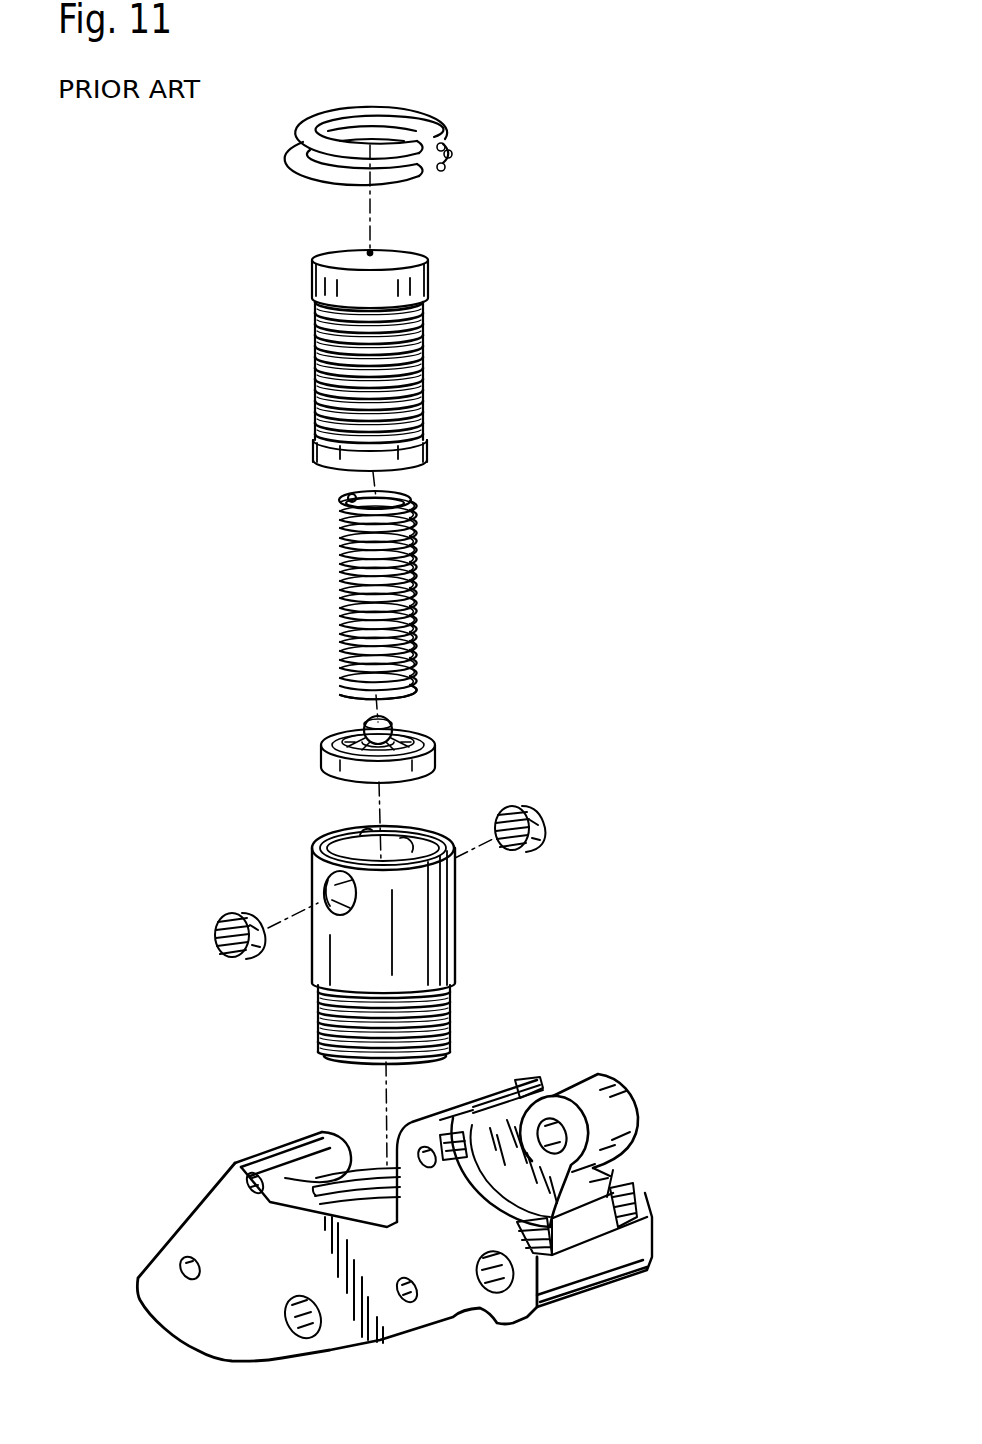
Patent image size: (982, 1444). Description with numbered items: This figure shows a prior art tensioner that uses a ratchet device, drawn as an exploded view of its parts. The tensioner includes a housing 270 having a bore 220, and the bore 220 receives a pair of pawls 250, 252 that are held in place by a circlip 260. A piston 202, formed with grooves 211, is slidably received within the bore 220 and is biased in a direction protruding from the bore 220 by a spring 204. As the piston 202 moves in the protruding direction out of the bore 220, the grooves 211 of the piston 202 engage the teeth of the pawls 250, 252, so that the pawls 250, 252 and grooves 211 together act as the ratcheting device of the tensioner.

The circlip 260 is at (450, 136).
The piston 202 is at (428, 282).
The grooves 211 is at (421, 372).
The spring 204 is at (408, 503).
The pawl 250 is at (536, 800).
The pawl 252 is at (212, 932).
The bore 220 is at (456, 918).
The housing 270 is at (637, 1102).